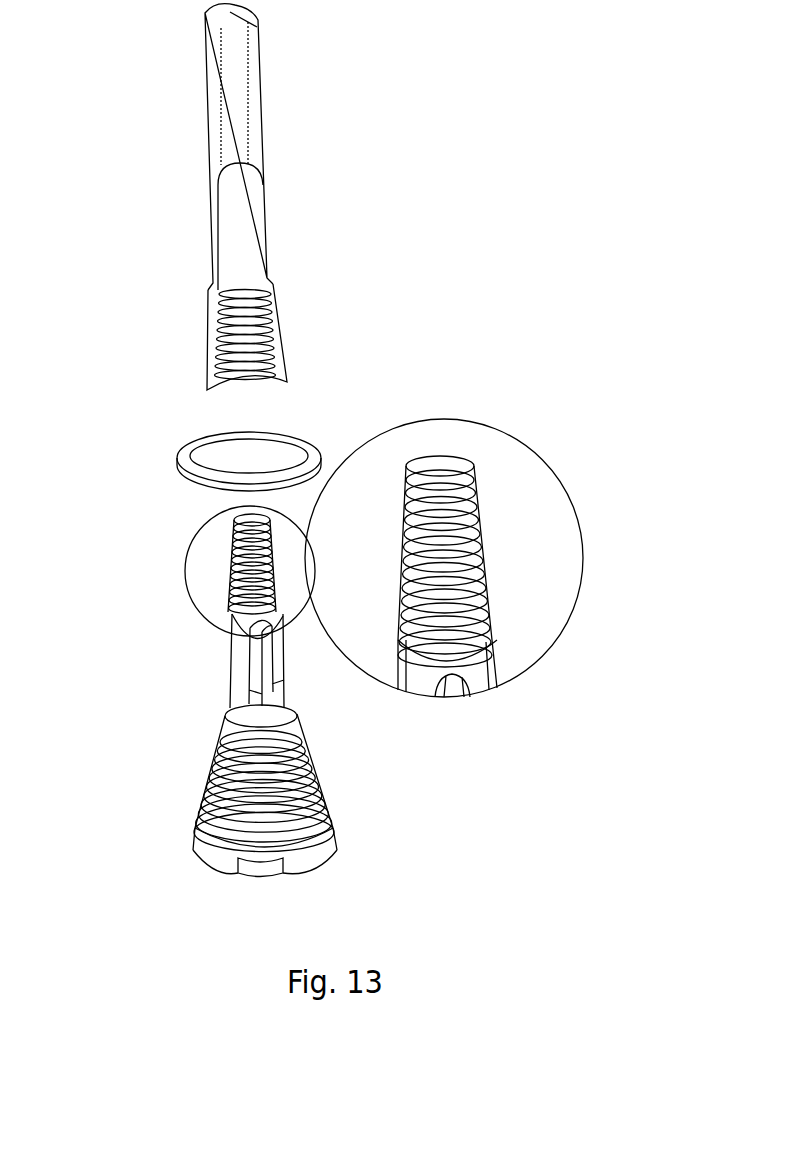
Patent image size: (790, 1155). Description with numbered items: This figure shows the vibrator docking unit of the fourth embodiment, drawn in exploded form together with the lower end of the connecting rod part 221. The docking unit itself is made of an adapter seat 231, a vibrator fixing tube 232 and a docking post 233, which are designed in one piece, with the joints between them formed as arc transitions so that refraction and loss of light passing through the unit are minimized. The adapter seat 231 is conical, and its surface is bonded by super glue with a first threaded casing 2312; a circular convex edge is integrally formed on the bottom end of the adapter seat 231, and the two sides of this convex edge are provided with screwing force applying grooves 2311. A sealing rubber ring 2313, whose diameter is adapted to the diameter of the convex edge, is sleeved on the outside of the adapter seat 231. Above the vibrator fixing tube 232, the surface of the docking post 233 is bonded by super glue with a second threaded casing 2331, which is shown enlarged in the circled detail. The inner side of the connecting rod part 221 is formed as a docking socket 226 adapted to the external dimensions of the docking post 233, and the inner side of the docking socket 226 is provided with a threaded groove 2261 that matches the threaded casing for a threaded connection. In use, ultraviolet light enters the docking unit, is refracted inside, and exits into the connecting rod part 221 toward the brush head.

The connecting rod part 221 is at (243, 196).
The docking socket 226 is at (242, 384).
The threaded groove 2261 is at (226, 322).
The sealing rubber ring 2313 is at (270, 478).
The docking post 233 is at (448, 462).
The second threaded casing 2331 is at (471, 492).
The vibrator fixing tube 232 is at (237, 677).
The first threaded casing 2312 is at (214, 781).
The adapter seat 231 is at (318, 856).
The screwing force applying grooves 2311 is at (241, 874).